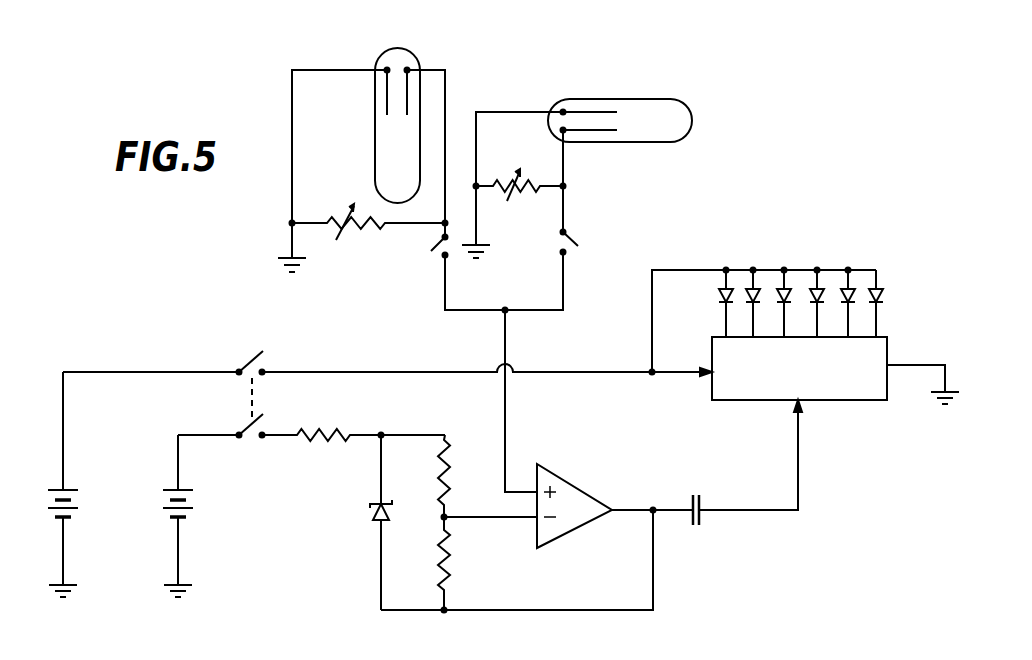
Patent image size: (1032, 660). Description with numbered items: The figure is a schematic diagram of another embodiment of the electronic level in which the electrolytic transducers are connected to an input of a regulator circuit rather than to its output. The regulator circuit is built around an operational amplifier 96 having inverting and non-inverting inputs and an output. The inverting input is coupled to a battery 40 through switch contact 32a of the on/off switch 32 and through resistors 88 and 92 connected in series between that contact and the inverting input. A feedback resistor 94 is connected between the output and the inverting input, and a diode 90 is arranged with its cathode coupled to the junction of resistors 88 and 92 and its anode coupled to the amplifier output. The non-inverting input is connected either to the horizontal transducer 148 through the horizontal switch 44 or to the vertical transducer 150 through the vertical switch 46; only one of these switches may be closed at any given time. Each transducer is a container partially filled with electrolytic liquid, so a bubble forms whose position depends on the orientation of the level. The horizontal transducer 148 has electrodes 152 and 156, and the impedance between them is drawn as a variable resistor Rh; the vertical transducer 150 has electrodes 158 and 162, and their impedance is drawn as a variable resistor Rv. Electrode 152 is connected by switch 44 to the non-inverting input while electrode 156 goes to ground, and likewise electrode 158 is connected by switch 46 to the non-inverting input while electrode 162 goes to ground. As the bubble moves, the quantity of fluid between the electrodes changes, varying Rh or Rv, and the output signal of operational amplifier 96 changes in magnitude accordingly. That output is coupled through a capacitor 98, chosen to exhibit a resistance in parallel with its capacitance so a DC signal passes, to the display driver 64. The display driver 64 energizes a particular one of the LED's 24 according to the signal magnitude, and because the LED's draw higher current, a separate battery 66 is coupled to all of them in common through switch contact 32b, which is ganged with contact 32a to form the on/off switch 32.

The vertical transducer 150 is at (399, 52).
The electrode 158 is at (407, 93).
The electrode 162 is at (386, 97).
The variable resistor Rv is at (356, 233).
The vertical switch 46 is at (432, 255).
The horizontal transducer 148 is at (684, 100).
The electrode 156 is at (594, 112).
The electrode 152 is at (596, 133).
The variable resistor Rh is at (514, 188).
The horizontal switch 44 is at (577, 252).
The LED's 24 is at (841, 258).
The display driver 64 is at (853, 401).
The on/off switch 32 is at (260, 409).
The switch contact 32a is at (256, 440).
The switch contact 32b is at (253, 353).
The battery 66 is at (82, 500).
The battery 40 is at (195, 502).
The resistor 88 is at (320, 446).
The diode 90 is at (374, 512).
The resistor 92 is at (452, 472).
The feedback resistor 94 is at (448, 559).
The operational amplifier 96 is at (582, 493).
The capacitor 98 is at (698, 527).